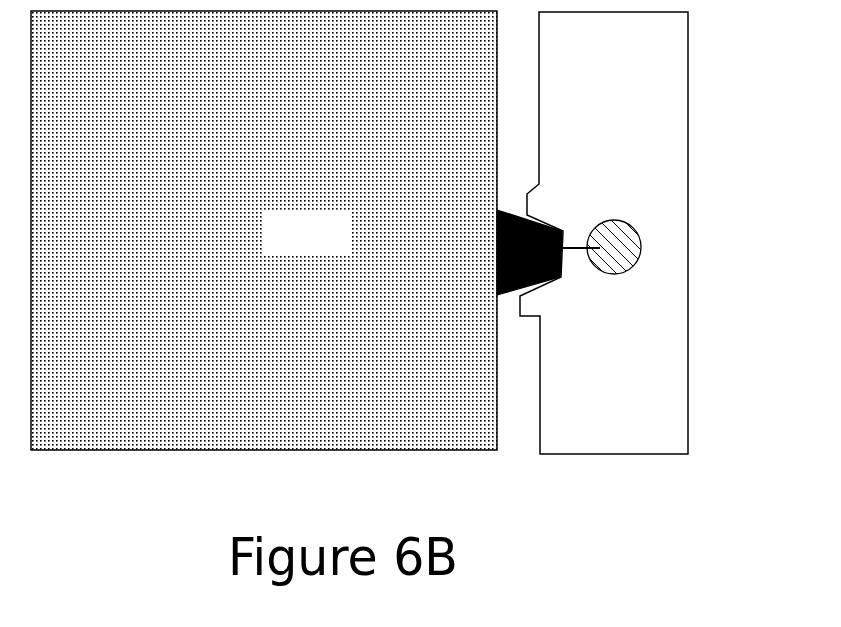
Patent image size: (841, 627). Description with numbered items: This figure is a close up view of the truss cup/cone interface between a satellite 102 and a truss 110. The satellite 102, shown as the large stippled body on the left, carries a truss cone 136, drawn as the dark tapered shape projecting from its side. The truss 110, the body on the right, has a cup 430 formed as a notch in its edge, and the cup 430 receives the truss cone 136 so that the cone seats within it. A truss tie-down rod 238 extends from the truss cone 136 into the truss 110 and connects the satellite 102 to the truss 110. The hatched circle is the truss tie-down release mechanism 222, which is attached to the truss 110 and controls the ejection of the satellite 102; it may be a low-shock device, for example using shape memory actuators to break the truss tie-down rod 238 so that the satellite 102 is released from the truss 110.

The satellite 102 is at (285, 244).
The truss 110 is at (595, 102).
The truss cone 136 is at (492, 256).
The truss tie-down rod 238 is at (575, 247).
The truss tie-down release mechanism 222 is at (642, 252).
The cup 430 is at (553, 298).